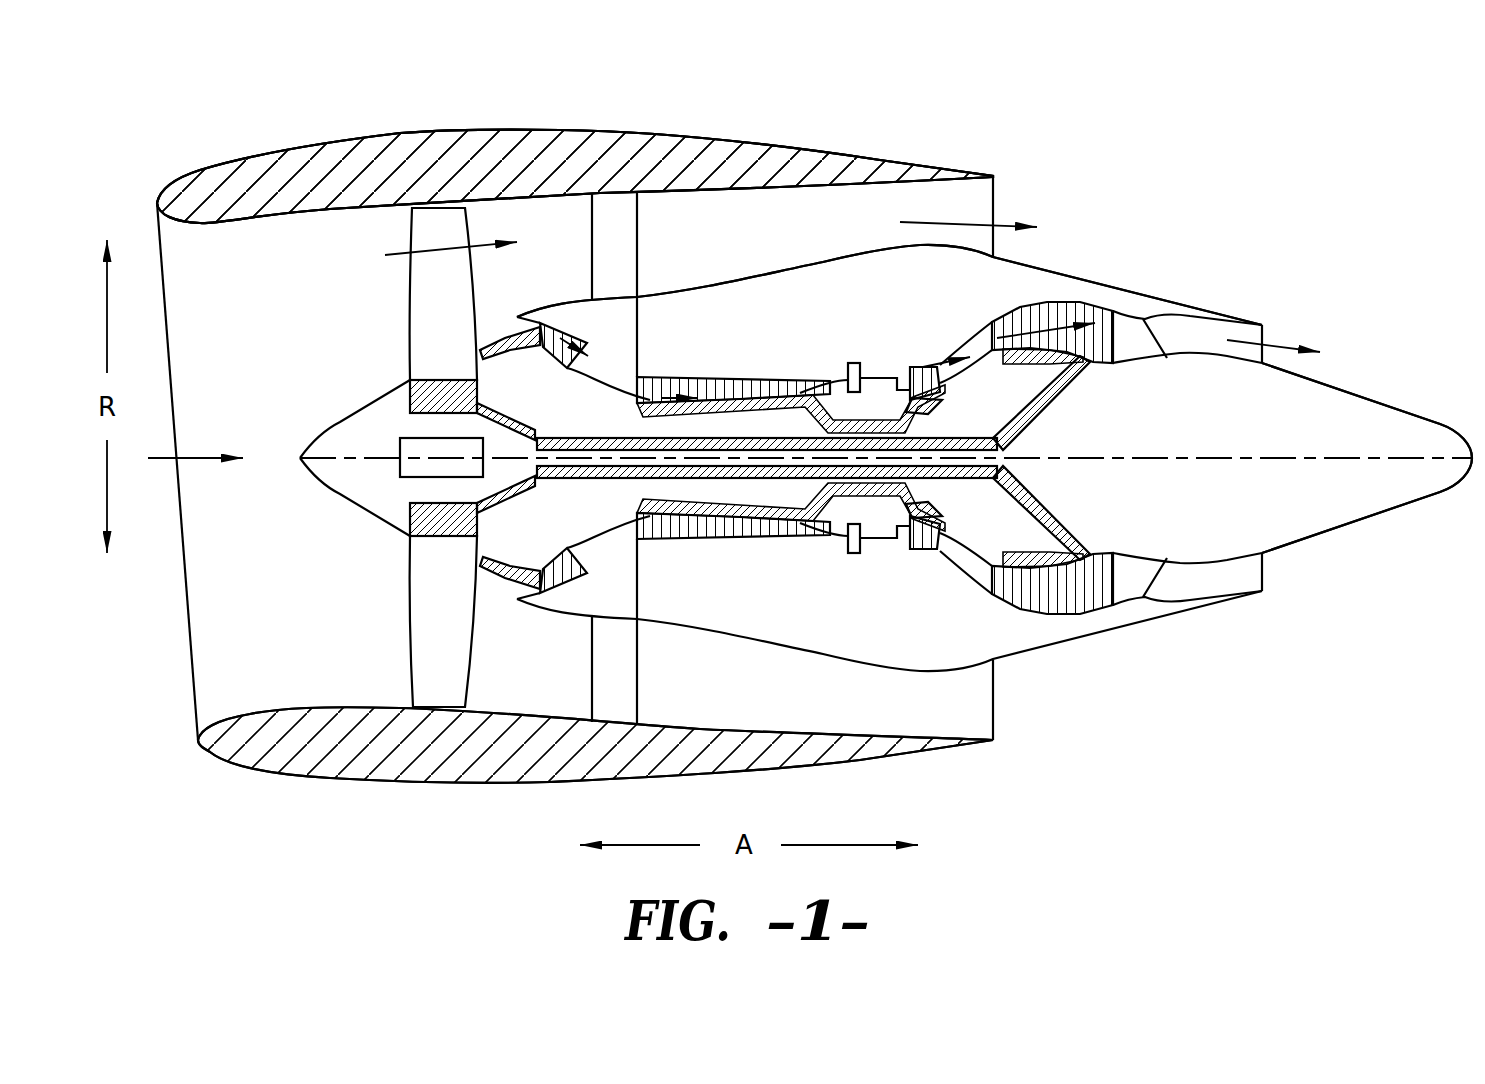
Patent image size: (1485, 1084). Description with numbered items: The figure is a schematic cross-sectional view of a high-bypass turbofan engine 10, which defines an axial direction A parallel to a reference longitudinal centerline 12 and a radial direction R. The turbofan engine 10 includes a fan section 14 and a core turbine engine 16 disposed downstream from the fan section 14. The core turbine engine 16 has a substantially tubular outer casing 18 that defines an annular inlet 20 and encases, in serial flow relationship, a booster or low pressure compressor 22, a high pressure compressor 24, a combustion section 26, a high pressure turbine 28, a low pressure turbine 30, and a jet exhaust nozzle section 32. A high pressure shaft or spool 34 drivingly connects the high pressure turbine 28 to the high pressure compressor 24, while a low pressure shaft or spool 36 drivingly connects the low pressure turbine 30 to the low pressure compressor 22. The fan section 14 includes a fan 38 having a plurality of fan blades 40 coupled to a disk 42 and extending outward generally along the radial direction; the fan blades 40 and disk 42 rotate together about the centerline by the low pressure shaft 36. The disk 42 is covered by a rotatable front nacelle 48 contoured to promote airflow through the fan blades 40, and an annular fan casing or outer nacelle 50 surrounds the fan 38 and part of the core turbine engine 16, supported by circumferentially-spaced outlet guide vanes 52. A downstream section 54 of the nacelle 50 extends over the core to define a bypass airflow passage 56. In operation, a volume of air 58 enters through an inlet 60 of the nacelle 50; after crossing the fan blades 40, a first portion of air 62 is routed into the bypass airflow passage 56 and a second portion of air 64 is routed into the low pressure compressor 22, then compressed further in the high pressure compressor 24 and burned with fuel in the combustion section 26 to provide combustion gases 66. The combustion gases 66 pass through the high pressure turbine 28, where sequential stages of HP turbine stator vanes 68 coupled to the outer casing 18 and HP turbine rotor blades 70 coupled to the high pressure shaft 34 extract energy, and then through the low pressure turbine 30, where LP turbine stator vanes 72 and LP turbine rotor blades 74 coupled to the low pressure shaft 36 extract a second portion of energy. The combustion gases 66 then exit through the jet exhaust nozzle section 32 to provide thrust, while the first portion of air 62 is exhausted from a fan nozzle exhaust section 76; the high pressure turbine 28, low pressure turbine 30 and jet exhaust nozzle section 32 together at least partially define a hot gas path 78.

The turbofan engine 10 is at (1250, 203).
The longitudinal centerline 12 is at (1172, 458).
The fan section 14 is at (491, 120).
The core turbine engine 16 is at (812, 317).
The outer casing 18 is at (833, 657).
The annular inlet 20 is at (527, 582).
The low pressure compressor 22 is at (582, 558).
The high pressure compressor 24 is at (670, 540).
The combustion section 26 is at (873, 540).
The high pressure turbine 28 is at (945, 540).
The low pressure turbine 30 is at (1097, 620).
The jet exhaust nozzle section 32 is at (1263, 333).
The high pressure shaft 34 is at (918, 400).
The low pressure shaft 36 is at (593, 440).
The fan 38 is at (393, 297).
The fan blades 40 is at (403, 648).
The disk 42 is at (407, 393).
The rotatable front nacelle 48 is at (330, 428).
The outer nacelle 50 is at (477, 783).
The outlet guide vanes 52 is at (637, 218).
The downstream section 54 is at (798, 147).
The bypass airflow passage 56 is at (757, 236).
The volume of air 58 is at (193, 457).
The inlet 60 is at (192, 695).
The first portion of air 62 is at (423, 247).
The second portion of air 64 is at (505, 335).
The combustion gases 66 is at (930, 383).
The HP turbine stator vanes 68 is at (913, 547).
The HP turbine rotor blades 70 is at (923, 543).
The LP turbine stator vanes 72 is at (998, 587).
The LP turbine rotor blades 74 is at (1013, 593).
The fan nozzle exhaust section 76 is at (995, 200).
The hot gas path 78 is at (983, 342).